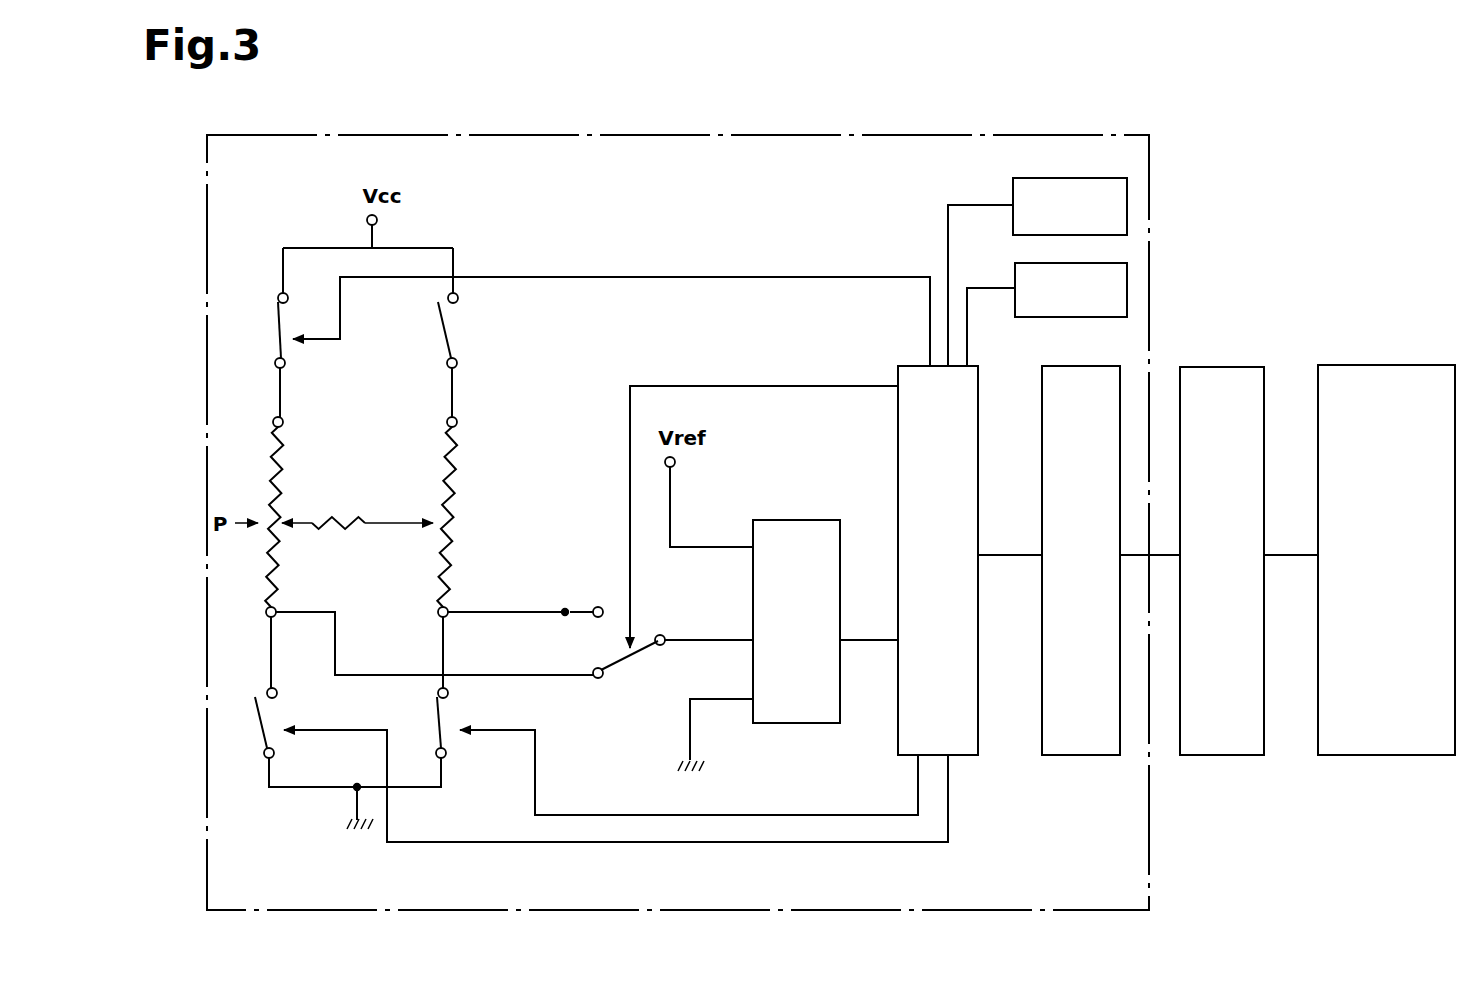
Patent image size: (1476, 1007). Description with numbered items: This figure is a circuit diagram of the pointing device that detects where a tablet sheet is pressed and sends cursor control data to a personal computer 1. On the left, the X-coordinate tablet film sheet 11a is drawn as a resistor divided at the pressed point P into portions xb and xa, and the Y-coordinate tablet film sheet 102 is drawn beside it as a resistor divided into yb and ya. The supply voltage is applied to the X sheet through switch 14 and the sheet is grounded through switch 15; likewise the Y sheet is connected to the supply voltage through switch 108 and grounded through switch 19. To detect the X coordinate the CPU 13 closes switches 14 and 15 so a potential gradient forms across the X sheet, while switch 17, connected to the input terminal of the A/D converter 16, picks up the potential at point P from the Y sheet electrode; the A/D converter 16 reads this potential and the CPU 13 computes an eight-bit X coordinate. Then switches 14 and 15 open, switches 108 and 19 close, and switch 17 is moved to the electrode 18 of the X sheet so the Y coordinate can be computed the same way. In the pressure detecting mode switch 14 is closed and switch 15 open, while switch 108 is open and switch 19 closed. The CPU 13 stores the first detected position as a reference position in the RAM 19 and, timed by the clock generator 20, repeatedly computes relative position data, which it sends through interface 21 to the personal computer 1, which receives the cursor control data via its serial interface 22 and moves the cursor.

The personal computer 1 is at (1345, 755).
The X-coordinate tablet film sheet 11a is at (271, 562).
The CPU 13 is at (938, 560).
The switch 14 is at (278, 323).
The switch 15 is at (262, 735).
The A/D converter 16 is at (796, 621).
The switch 17 is at (635, 655).
The electrode 18 is at (268, 620).
The switch 19 is at (440, 715).
The clock generator 20 is at (1127, 277).
The interface 21 is at (1072, 755).
The serial interface 22 is at (1205, 755).
The Y-coordinate tablet film sheet 102 is at (440, 468).
The switch 108 is at (440, 320).